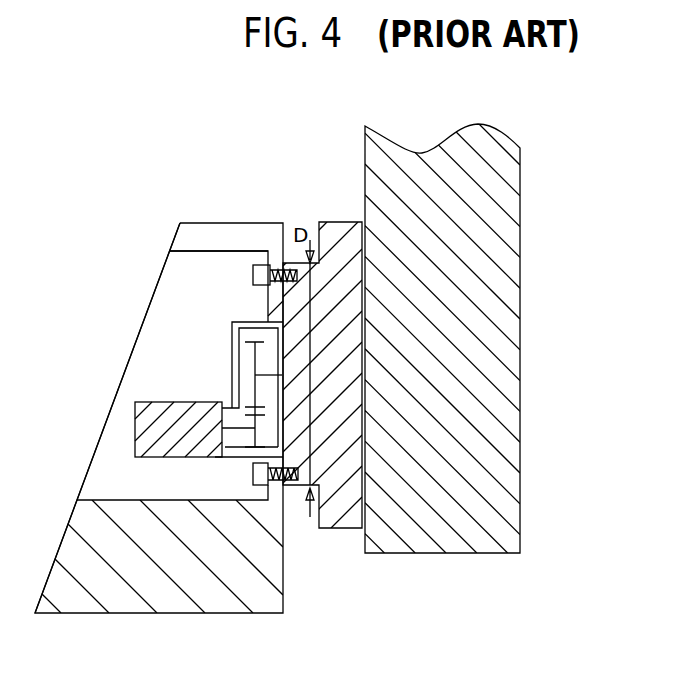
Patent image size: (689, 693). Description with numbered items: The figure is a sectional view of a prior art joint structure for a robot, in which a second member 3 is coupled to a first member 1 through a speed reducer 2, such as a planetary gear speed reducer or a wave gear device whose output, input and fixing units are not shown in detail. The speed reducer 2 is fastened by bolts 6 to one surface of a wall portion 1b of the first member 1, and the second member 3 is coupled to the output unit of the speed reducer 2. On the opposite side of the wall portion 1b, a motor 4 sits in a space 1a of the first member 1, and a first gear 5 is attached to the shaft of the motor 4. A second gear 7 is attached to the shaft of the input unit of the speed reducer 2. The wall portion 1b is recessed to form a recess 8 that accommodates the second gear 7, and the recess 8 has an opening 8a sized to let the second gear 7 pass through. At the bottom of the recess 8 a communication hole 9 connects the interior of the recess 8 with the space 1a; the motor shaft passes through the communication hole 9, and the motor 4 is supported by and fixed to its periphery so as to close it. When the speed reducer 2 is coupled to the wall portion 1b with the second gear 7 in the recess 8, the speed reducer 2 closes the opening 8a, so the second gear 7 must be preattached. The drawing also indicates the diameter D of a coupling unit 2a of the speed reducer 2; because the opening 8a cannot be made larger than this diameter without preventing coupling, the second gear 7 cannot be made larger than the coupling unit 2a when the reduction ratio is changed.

The first member 1 is at (252, 594).
The space 1a is at (112, 464).
The wall portion 1b is at (253, 290).
The speed reducer 2 is at (362, 200).
The coupling unit 2a is at (294, 486).
The second member 3 is at (468, 347).
The motor 4 is at (167, 402).
The first gear 5 is at (258, 437).
The bolts 6 is at (250, 481).
The second gear 7 is at (233, 334).
The recess 8 is at (252, 321).
The opening 8a is at (269, 392).
The communication hole 9 is at (232, 395).